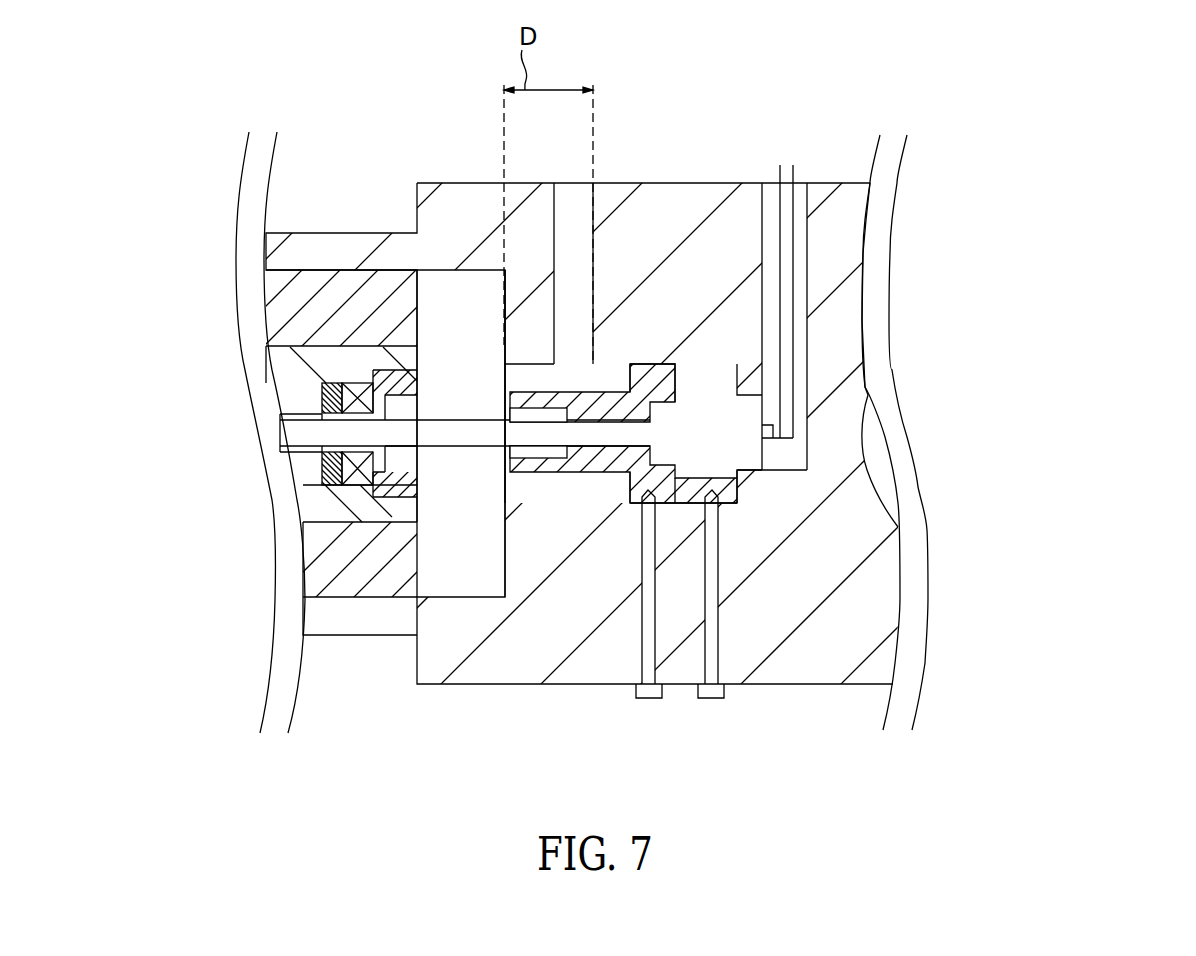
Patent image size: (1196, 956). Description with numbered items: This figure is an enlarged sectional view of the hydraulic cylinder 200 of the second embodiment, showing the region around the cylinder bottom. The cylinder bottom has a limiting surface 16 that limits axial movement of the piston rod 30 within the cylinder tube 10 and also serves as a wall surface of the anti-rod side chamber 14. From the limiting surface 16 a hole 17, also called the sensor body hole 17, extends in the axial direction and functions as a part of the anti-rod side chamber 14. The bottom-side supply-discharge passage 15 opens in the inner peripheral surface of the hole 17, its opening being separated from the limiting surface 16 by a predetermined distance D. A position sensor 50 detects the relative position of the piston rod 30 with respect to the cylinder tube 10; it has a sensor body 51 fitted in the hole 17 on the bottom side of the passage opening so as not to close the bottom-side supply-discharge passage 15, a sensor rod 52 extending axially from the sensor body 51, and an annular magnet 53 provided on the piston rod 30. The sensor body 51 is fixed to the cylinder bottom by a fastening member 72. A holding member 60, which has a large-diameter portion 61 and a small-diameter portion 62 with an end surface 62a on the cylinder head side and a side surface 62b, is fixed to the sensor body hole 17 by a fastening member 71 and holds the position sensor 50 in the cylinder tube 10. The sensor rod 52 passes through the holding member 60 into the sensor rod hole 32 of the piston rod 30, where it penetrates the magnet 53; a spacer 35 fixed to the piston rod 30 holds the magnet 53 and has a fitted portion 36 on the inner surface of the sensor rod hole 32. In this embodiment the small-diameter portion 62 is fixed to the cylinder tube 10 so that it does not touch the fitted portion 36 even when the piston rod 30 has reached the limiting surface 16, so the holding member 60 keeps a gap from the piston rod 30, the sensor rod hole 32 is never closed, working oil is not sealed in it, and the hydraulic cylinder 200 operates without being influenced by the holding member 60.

The cylinder tube 10 is at (822, 686).
The anti-rod side chamber 14 is at (490, 582).
The bottom-side supply-discharge passage 15 is at (556, 189).
The limiting surface 16 is at (504, 328).
The hole (sensor body hole) 17 is at (507, 378).
The piston rod 30 is at (307, 499).
The sensor rod hole 32 is at (305, 435).
The spacer 35 is at (390, 480).
The fitted portion 36 is at (418, 460).
The position sensor 50 is at (762, 413).
The sensor body 51 is at (740, 455).
The sensor rod 52 is at (310, 433).
The annular magnet 53 is at (350, 478).
The holding member 60 is at (633, 362).
The large-diameter portion 61 is at (636, 486).
The small-diameter portion 62 is at (585, 460).
The end surface 62a is at (508, 410).
The side surface 62b is at (600, 364).
The fastening member 71 is at (648, 698).
The fastening member 72 is at (713, 698).
The hydraulic cylinder 200 is at (1088, 130).